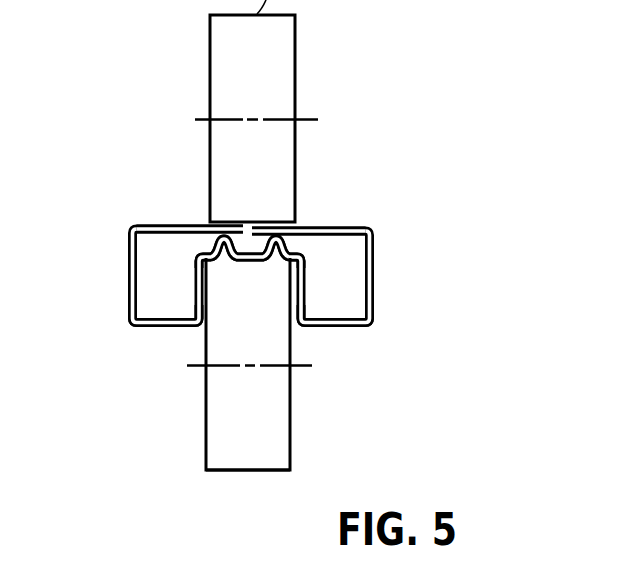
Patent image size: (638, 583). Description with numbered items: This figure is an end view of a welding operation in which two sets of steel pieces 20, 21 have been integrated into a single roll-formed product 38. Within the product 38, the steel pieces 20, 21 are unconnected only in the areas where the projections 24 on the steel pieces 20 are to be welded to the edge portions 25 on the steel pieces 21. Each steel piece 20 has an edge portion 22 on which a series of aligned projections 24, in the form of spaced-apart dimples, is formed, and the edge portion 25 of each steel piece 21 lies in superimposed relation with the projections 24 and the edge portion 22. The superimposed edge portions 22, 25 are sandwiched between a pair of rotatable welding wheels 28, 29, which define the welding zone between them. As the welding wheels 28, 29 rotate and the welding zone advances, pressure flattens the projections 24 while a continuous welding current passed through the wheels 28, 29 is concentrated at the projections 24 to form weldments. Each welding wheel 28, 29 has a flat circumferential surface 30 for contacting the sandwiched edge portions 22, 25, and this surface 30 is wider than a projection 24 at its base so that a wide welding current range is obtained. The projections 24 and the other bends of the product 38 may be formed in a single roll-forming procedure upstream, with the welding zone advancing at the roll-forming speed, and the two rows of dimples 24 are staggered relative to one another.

The steel piece 20 is at (200, 290).
The steel piece 21 is at (178, 226).
The edge portion 22 is at (200, 250).
The projections 24 is at (271, 240).
The edge portion 25 is at (256, 158).
The welding wheel 28 is at (262, 422).
The welding wheel 29 is at (283, 52).
The circumferential surface 30 is at (250, 472).
The roll-formed product 38 is at (374, 272).